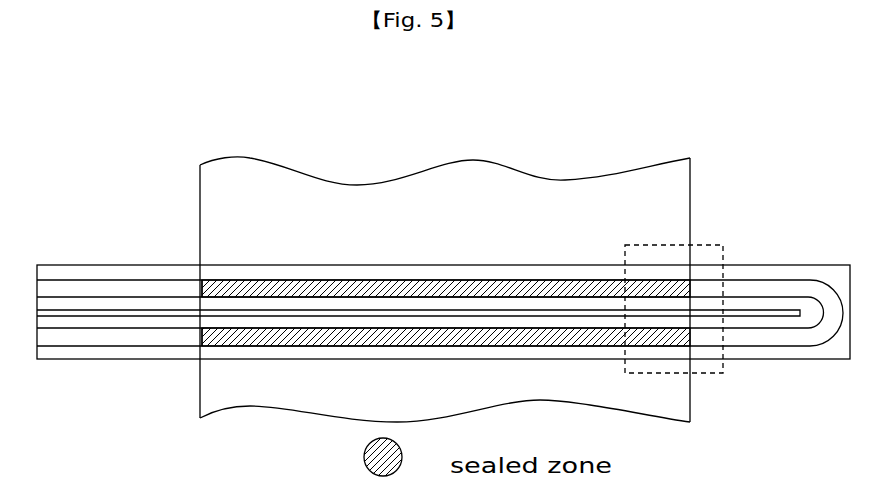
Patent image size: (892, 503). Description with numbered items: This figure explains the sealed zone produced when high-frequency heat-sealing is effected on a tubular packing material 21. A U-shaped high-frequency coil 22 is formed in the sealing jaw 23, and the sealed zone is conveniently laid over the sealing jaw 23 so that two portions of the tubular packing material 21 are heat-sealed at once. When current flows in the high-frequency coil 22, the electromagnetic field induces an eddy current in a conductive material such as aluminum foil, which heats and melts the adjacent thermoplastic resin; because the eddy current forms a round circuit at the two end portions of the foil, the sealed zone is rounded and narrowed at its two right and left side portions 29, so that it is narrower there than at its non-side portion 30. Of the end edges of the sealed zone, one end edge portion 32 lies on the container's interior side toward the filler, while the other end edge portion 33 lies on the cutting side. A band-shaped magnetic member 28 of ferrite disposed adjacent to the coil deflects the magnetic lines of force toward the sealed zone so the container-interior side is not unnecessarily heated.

The tubular packing material 21 is at (635, 163).
The high-frequency coil 22 is at (758, 292).
The sealing jaw 23 is at (59, 260).
The magnetic member 28 is at (755, 320).
The side portions 29 is at (204, 274).
The non-side portion 30 is at (401, 274).
The end edge portion 32 is at (590, 278).
The end edge portion 33 is at (326, 296).